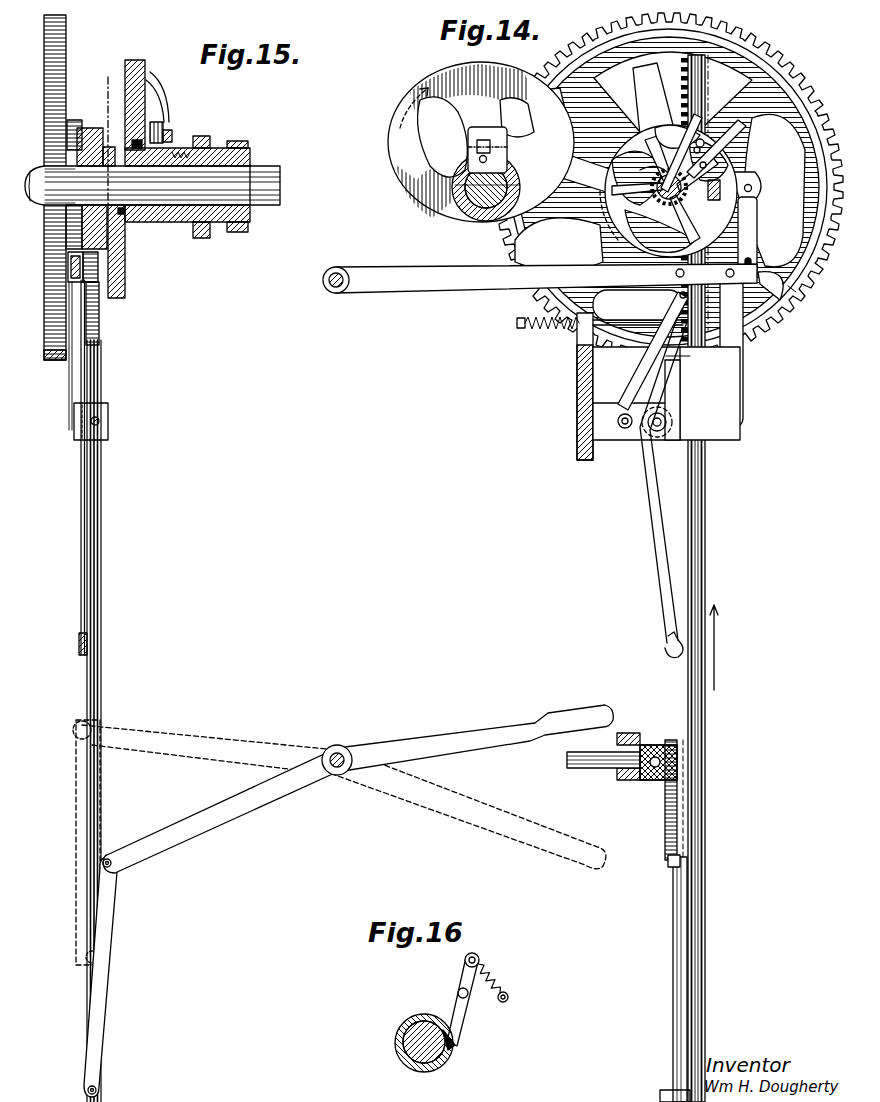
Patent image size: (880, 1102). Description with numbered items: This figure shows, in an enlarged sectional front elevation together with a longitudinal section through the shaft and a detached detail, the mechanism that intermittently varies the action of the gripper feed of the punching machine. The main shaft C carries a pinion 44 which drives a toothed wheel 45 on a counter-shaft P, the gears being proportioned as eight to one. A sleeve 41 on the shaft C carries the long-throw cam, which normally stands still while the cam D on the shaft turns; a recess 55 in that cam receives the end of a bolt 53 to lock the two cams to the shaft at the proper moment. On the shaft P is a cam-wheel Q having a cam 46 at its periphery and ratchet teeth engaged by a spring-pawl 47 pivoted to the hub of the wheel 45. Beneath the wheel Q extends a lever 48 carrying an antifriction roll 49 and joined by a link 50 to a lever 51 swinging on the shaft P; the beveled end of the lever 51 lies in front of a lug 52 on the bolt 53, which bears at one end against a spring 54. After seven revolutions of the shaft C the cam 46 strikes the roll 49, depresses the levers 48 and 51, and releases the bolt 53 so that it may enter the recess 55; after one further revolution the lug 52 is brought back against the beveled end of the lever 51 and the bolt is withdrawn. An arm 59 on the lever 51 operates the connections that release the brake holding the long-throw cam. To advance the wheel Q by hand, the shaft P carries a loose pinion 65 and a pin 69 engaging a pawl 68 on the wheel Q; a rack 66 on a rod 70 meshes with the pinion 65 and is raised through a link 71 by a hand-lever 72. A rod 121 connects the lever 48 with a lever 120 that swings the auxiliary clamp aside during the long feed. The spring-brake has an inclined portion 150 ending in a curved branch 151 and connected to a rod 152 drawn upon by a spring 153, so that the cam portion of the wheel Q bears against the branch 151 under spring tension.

In FIG. 15, the sleeve 41 is at (185, 222).
In FIG. 14, the sleeve 41 is at (458, 190).
In FIG. 15, the pinion 44 is at (55, 195).
In FIG. 14, the pinion 44 is at (455, 212).
In FIG. 15, the toothed wheel 45 is at (62, 26).
In FIG. 14, the toothed wheel 45 is at (790, 80).
In FIG. 14, the cam 46 is at (750, 158).
In FIG. 14, the spring-pawl 47 is at (608, 178).
In FIG. 15, the lever 48 is at (126, 292).
In FIG. 14, the lever 48 is at (540, 278).
In FIG. 15, the antifriction-roll 49 is at (66, 318).
In FIG. 14, the antifriction-roll 49 is at (670, 282).
In FIG. 14, the link 50 is at (760, 218).
In FIG. 14, the lever 51 is at (776, 186).
In FIG. 15, the lug 52 is at (172, 145).
In FIG. 14, the lug 52 is at (468, 146).
In FIG. 15, the bolt 53 is at (125, 152).
In FIG. 15, the spring 54 is at (250, 156).
In FIG. 15, the recess 55 is at (126, 215).
In FIG. 15, the arm 59 is at (148, 112).
In FIG. 14, the arm 59 is at (640, 96).
In FIG. 14, the loose pinion 65 is at (668, 199).
In FIG. 15, the rack 66 is at (100, 328).
In FIG. 14, the rack 66 is at (742, 338).
In FIG. 14, the pawl 68 is at (722, 132).
In FIG. 16, the pawl 68 is at (458, 980).
In FIG. 16, the pin 69 is at (466, 1046).
In FIG. 15, the rod 70 is at (100, 604).
In FIG. 14, the rod 70 is at (705, 574).
In FIG. 15, the link 71 is at (100, 984).
In FIG. 14, the link 71 is at (696, 966).
In FIG. 15, the hand-lever 72 is at (405, 735).
In FIG. 15, the lever 120 is at (80, 553).
In FIG. 14, the lever 120 is at (653, 530).
In FIG. 15, the rod 121 is at (96, 382).
In FIG. 14, the rod 121 is at (744, 384).
In FIG. 14, the inclined portion 150 is at (650, 376).
In FIG. 14, the curved branch 151 is at (796, 292).
In FIG. 14, the rod 152 is at (630, 332).
In FIG. 14, the spring 153 is at (538, 328).
In FIG. 15, the shaft C is at (281, 182).
In FIG. 14, the shaft C is at (480, 216).
In FIG. 15, the hub D is at (198, 137).
In FIG. 14, the counter-shaft P is at (702, 138).
In FIG. 16, the counter-shaft P is at (394, 1042).
In FIG. 15, the cam-wheel Q is at (72, 120).
In FIG. 14, the cam-wheel Q is at (606, 200).